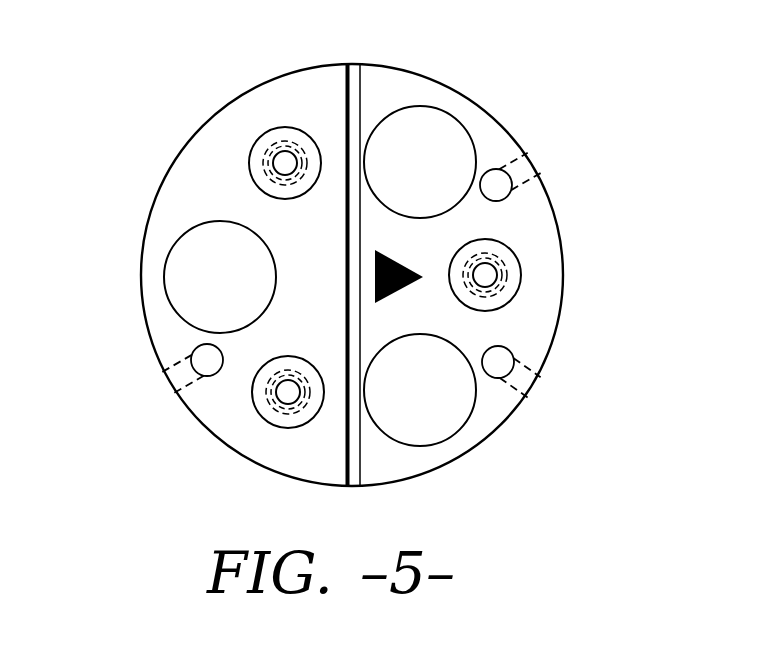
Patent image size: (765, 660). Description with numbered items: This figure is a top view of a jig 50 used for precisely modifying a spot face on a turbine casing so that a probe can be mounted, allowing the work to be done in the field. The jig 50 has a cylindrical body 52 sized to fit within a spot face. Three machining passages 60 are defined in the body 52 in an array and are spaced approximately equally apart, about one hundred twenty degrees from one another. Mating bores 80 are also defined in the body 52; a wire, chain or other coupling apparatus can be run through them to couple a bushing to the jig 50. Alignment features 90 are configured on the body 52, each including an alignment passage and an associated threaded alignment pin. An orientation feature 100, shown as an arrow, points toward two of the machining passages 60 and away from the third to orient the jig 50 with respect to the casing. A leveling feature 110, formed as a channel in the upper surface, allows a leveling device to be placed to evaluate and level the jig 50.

The jig 50 is at (130, 113).
The body 52 is at (563, 307).
The machining passage 60 is at (213, 278).
The mating bore 80 is at (187, 372).
The alignment feature 90 is at (265, 115).
The orientation feature 100 is at (395, 245).
The leveling feature 110 is at (357, 58).